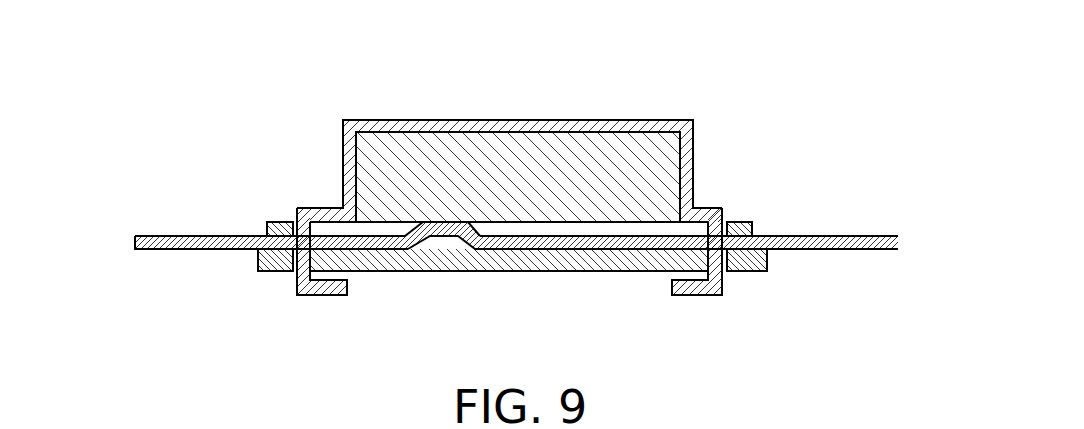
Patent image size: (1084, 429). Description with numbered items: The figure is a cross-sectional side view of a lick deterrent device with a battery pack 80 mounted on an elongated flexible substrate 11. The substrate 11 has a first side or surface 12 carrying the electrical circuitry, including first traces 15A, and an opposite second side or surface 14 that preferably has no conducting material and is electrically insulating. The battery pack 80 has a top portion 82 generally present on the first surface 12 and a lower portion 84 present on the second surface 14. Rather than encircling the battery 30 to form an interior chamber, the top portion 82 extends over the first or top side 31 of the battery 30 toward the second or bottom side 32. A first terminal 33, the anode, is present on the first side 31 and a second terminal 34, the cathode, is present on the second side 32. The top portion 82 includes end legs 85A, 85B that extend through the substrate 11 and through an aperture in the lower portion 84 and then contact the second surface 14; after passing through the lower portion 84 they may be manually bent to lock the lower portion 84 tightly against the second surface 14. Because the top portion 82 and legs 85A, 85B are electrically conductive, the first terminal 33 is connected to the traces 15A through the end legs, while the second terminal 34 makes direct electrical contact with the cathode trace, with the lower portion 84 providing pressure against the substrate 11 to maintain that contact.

The elongated flexible substrate 11 is at (232, 217).
The first side or surface 12 is at (188, 236).
The second side or surface 14 is at (202, 250).
The first traces 15A is at (285, 218).
The battery 30 is at (423, 132).
The first side 31 is at (483, 132).
The second side 32 is at (561, 223).
The first terminal 33 is at (565, 132).
The second terminal 34 is at (400, 226).
The battery pack 80 is at (633, 98).
The top portion 82 is at (695, 135).
The lower portion 84 is at (508, 271).
The end leg 85A is at (320, 297).
The end leg 85B is at (705, 296).